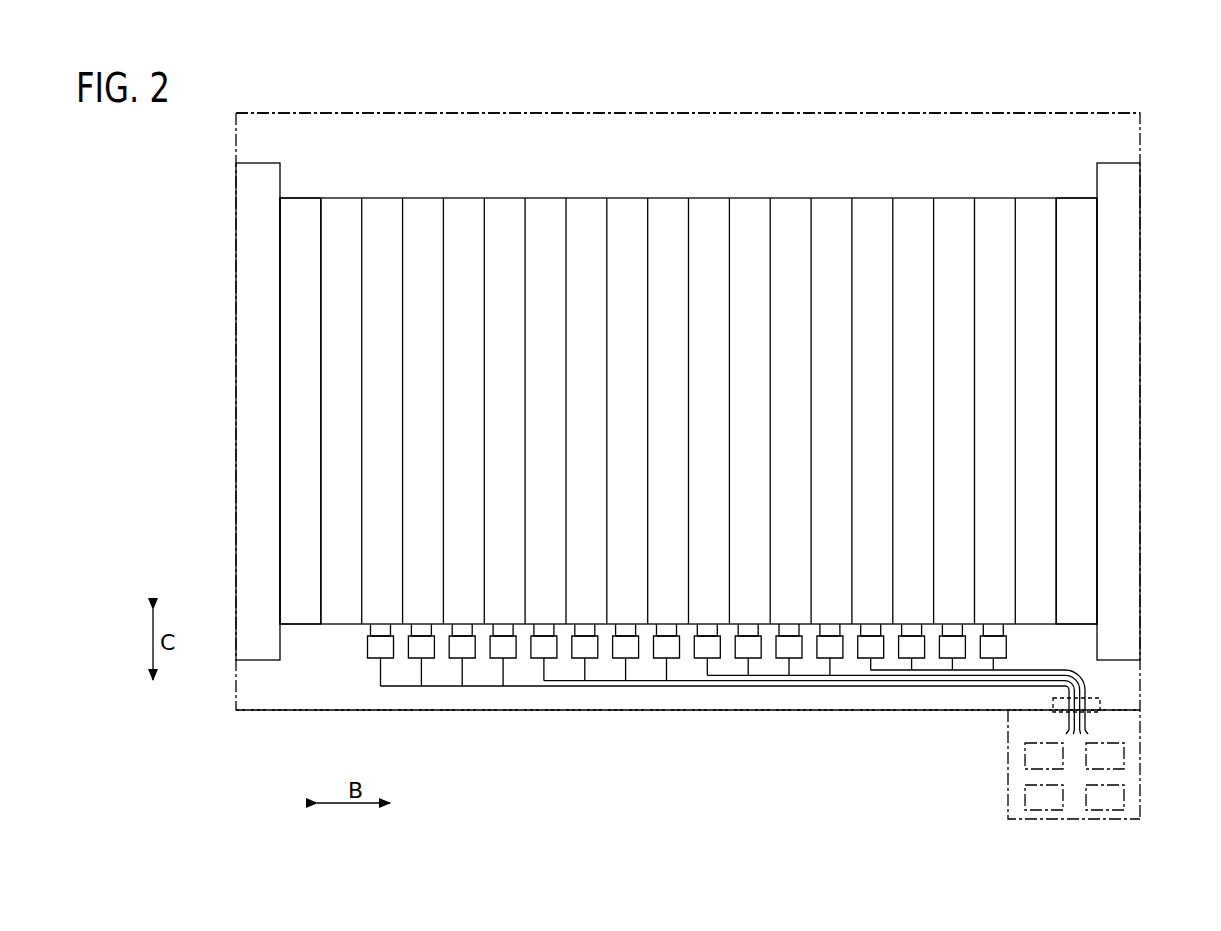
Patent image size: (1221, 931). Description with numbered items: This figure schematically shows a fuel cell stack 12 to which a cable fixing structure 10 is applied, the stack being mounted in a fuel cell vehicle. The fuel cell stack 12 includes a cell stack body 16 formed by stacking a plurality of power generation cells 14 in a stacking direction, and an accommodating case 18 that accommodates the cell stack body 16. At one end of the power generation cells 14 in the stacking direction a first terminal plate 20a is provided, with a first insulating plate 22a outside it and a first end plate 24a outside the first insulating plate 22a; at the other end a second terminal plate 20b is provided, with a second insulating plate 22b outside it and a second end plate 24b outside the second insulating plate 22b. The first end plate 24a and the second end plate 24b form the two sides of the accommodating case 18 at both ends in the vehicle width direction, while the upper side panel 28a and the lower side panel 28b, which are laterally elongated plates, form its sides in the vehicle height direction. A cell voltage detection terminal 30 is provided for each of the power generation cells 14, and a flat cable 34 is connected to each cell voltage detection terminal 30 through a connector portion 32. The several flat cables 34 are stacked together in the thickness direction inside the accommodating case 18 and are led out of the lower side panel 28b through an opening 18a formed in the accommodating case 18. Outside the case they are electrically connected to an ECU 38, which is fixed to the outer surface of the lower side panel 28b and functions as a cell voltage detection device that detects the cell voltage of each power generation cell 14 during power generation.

The cable fixing structure 10 is at (1033, 760).
The fuel cell stack 12 is at (396, 92).
The power generation cell 14 is at (709, 196).
The cell stack body 16 is at (862, 133).
The accommodating case 18 is at (786, 111).
The opening 18a is at (1100, 706).
The first terminal plate 20a is at (344, 210).
The second terminal plate 20b is at (1032, 210).
The first insulating plate 22a is at (303, 210).
The second insulating plate 22b is at (1076, 210).
The first end plate 24a is at (250, 182).
The second end plate 24b is at (1128, 185).
The upper side panel 28a is at (676, 112).
The lower side panel 28b is at (268, 712).
The cell voltage detection terminal 30 is at (513, 632).
The connector portion 32 is at (503, 655).
The flat cable 34 is at (443, 688).
The ECU 38 is at (1133, 797).